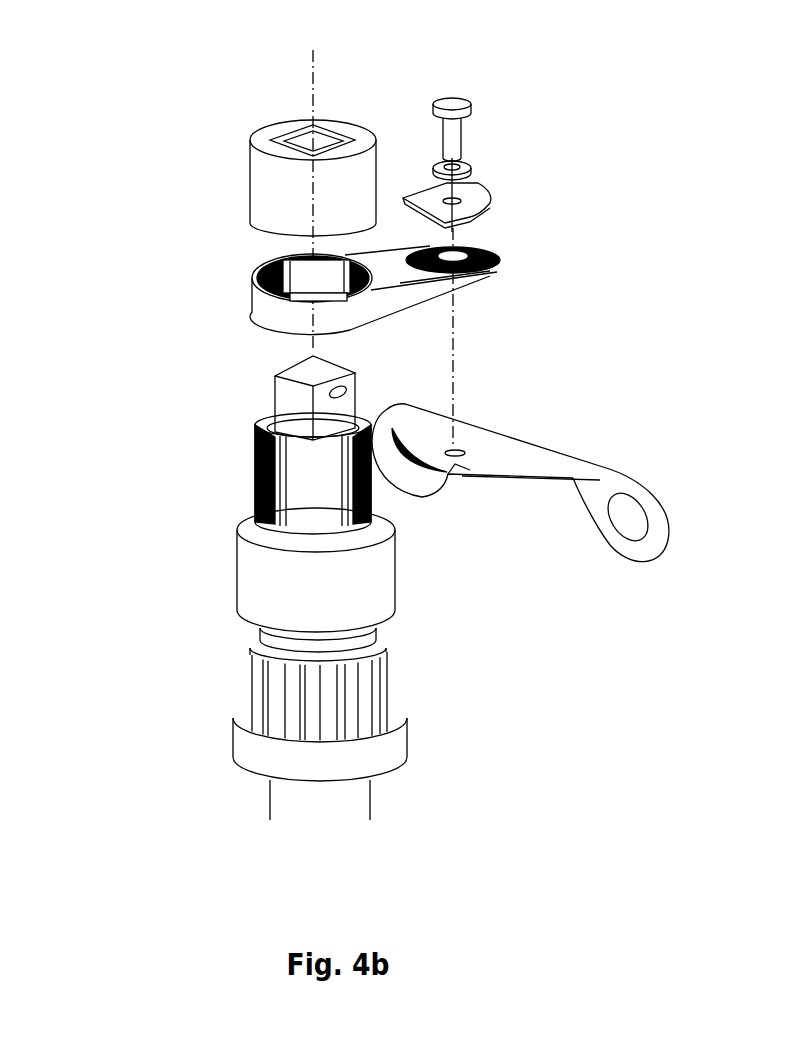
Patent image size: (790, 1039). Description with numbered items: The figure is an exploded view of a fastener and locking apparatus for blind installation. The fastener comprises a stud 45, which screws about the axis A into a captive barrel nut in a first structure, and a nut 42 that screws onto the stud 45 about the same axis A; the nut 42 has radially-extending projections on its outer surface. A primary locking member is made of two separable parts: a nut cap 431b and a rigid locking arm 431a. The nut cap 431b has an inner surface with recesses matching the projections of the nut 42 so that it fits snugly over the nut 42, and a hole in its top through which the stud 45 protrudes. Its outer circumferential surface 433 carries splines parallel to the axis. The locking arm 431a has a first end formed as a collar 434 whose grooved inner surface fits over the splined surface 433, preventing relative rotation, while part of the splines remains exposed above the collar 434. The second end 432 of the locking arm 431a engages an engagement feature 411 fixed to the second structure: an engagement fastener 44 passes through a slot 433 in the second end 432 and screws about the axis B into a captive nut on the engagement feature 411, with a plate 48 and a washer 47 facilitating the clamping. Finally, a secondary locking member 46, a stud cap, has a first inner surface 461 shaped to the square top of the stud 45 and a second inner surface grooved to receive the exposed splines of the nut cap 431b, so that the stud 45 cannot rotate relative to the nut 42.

The axis of rotation A is at (305, 98).
The axis of rotation of the engagement fastener B is at (456, 357).
The nut 42 is at (330, 697).
The engagement fastener 44 is at (452, 98).
The stud 45 is at (292, 405).
The secondary locking member 46 is at (248, 164).
The washer 47 is at (470, 160).
The plate 48 is at (475, 203).
The engagement feature 411 is at (512, 452).
The locking arm 431a is at (374, 360).
The nut cap 431b is at (262, 583).
The second end 432 is at (477, 273).
The outer circumferential surface / slot 433 is at (493, 233).
The collar 434 is at (258, 270).
The first inner surface 461 is at (265, 131).